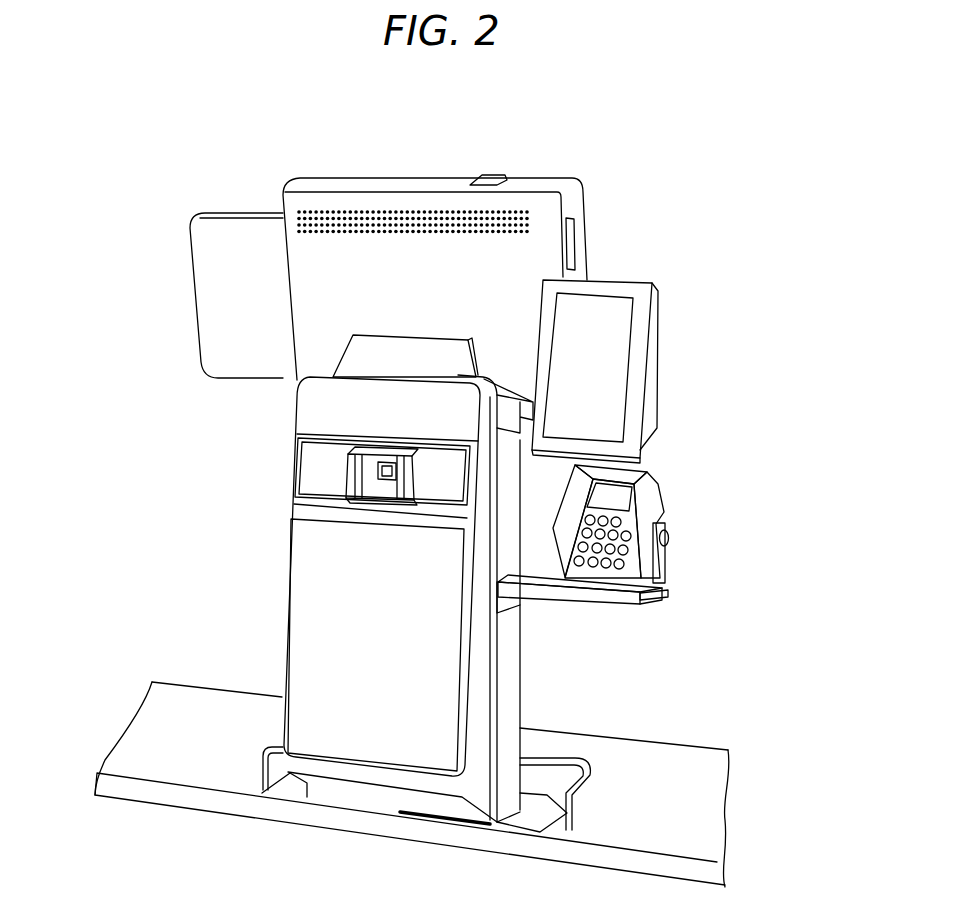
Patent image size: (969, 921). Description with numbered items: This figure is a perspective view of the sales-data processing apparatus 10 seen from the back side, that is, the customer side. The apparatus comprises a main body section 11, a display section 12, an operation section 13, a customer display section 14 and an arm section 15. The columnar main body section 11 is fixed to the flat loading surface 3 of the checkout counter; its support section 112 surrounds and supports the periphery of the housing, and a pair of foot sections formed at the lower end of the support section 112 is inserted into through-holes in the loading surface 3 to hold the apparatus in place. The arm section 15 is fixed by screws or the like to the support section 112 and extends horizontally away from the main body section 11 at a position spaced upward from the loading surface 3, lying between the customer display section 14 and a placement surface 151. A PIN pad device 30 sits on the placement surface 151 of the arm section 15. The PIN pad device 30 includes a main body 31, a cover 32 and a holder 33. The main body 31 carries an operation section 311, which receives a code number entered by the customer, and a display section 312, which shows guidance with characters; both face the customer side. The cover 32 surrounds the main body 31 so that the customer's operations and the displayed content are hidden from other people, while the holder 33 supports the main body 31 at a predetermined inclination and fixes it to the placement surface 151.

The sales-data processing apparatus 10 is at (535, 165).
The display section 12 is at (366, 185).
The operation section 13 is at (237, 212).
The customer display section 14 is at (618, 290).
The main body section 11 is at (308, 581).
The support section 112 is at (310, 643).
The placement surface 151 is at (545, 577).
The arm section 15 is at (621, 603).
The PIN pad device 30 is at (680, 508).
The main body 31 is at (620, 492).
The display section 312 is at (628, 494).
The operation section 311 is at (586, 567).
The cover 32 is at (658, 526).
The holder 33 is at (664, 570).
The loading surface 3 is at (173, 757).